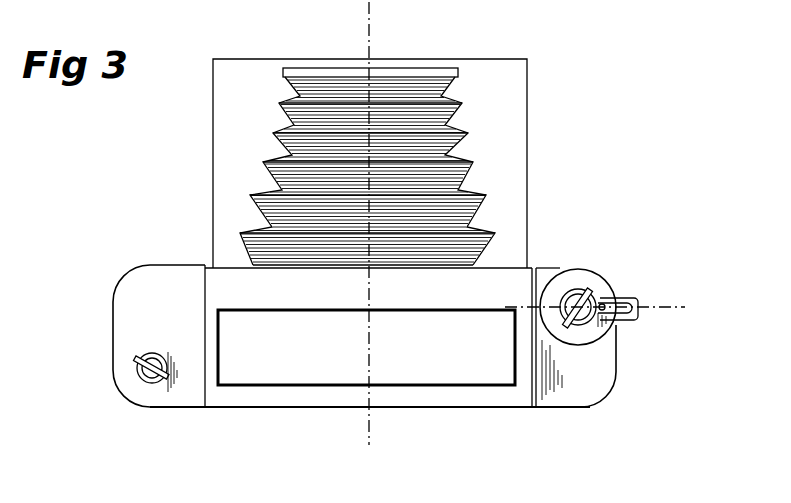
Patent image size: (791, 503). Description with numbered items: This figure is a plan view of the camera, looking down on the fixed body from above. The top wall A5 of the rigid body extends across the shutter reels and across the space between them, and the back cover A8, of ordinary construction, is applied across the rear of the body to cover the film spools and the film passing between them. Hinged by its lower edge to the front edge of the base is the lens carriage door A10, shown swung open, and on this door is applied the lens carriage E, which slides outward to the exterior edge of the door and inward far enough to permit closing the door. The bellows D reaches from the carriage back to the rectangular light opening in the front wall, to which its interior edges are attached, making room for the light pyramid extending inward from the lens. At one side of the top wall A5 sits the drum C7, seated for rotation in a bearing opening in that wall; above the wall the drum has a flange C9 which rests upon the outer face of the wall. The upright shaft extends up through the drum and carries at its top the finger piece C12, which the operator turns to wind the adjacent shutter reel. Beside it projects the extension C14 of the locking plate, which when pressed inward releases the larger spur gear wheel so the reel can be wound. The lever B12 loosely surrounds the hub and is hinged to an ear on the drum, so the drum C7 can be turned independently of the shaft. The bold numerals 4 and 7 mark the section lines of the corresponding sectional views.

The lens carriage E is at (425, 72).
The lens carriage door A10 is at (512, 128).
The bellows D is at (460, 173).
The top wall A5 is at (225, 290).
The back cover A8 is at (297, 407).
The finger piece C12 is at (595, 295).
The extension C14 is at (640, 302).
The lever B12 is at (643, 313).
The drum C7 is at (595, 336).
The flange C9 is at (588, 345).
The section line 4- 4 is at (367, 241).
The section line 7- 7 is at (618, 306).